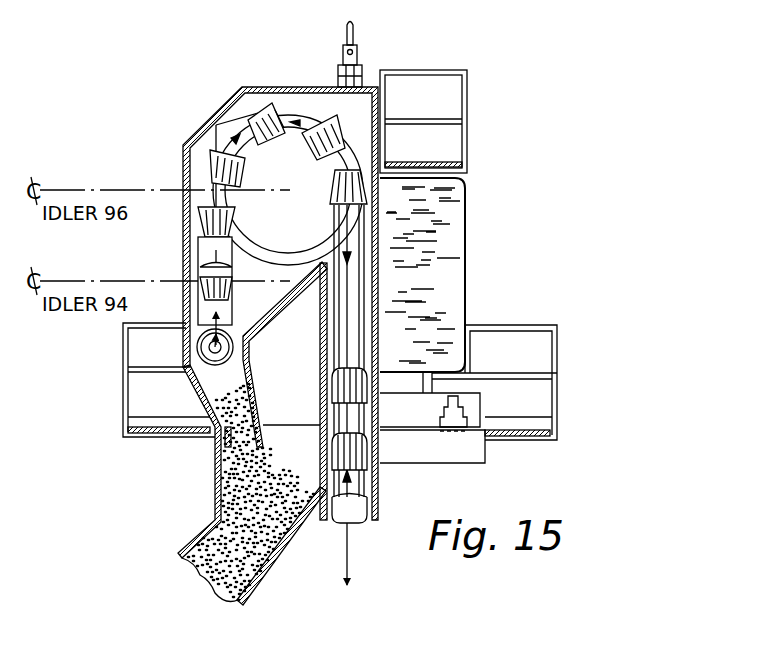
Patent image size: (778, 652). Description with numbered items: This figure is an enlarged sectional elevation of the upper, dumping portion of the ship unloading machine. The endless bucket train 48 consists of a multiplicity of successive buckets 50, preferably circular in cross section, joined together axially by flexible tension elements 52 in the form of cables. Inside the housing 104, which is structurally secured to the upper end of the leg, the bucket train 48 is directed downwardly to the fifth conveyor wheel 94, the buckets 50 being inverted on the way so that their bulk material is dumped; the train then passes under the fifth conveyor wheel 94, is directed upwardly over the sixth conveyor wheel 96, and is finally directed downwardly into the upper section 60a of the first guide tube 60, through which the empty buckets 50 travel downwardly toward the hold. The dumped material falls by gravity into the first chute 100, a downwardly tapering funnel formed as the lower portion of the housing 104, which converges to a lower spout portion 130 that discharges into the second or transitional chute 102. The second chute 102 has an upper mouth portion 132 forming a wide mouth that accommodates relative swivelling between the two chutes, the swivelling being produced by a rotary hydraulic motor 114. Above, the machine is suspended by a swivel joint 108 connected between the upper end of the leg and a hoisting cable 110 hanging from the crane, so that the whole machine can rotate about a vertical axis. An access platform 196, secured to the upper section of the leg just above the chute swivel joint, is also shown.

The buckets 50 is at (257, 118).
The sixth conveyor wheel 96 is at (287, 113).
The housing 104 is at (182, 146).
The hoisting cable 110 is at (355, 29).
The swivel joint 108 is at (368, 67).
The fifth conveyor wheel 94 is at (200, 256).
The first chute 100 is at (197, 386).
The upper section of first guide tube 60a is at (378, 282).
The rotary hydraulic motor 114 is at (460, 403).
The access platform 196 is at (540, 428).
The flexible tension elements 52 is at (350, 413).
The endless bucket train 48 is at (368, 449).
The first guide tube 60 is at (382, 483).
The lower spout portion 130 is at (215, 450).
The mouth portion 132 is at (215, 485).
The second chute 102 is at (212, 518).